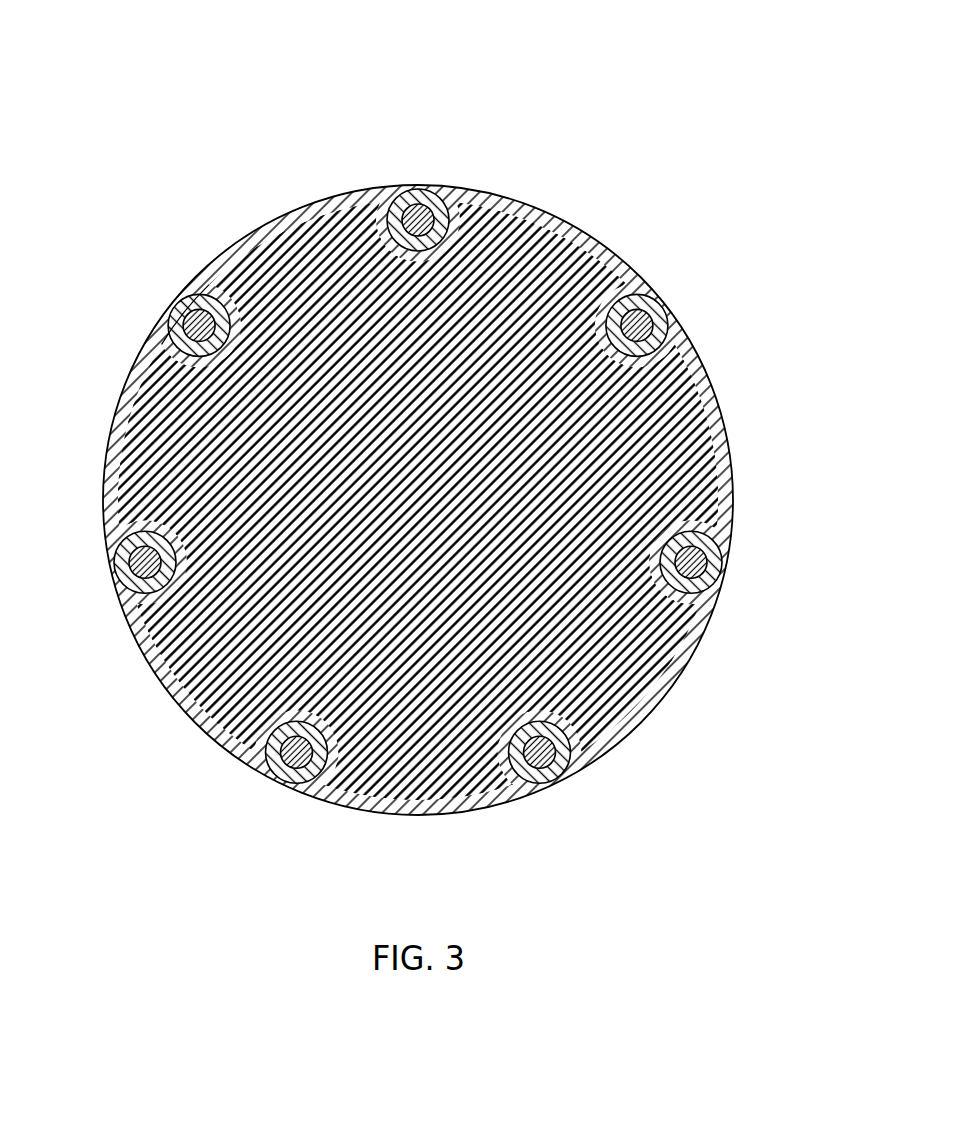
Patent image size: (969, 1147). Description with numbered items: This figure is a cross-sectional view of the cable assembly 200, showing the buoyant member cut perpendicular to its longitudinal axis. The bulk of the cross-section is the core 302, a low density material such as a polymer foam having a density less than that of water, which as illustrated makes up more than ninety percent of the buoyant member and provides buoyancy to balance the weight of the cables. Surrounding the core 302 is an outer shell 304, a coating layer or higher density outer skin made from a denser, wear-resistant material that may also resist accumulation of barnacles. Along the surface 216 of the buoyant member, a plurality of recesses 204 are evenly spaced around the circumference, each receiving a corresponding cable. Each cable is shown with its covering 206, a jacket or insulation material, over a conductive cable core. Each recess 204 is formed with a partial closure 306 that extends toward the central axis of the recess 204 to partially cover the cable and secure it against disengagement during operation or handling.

The cable assembly 200 is at (423, 412).
The recesses 204 is at (375, 243).
The covering 206 is at (660, 302).
The surface 216 is at (723, 417).
The core 302 is at (248, 265).
The outer shell 304 is at (157, 332).
The partial closure 306 is at (120, 587).